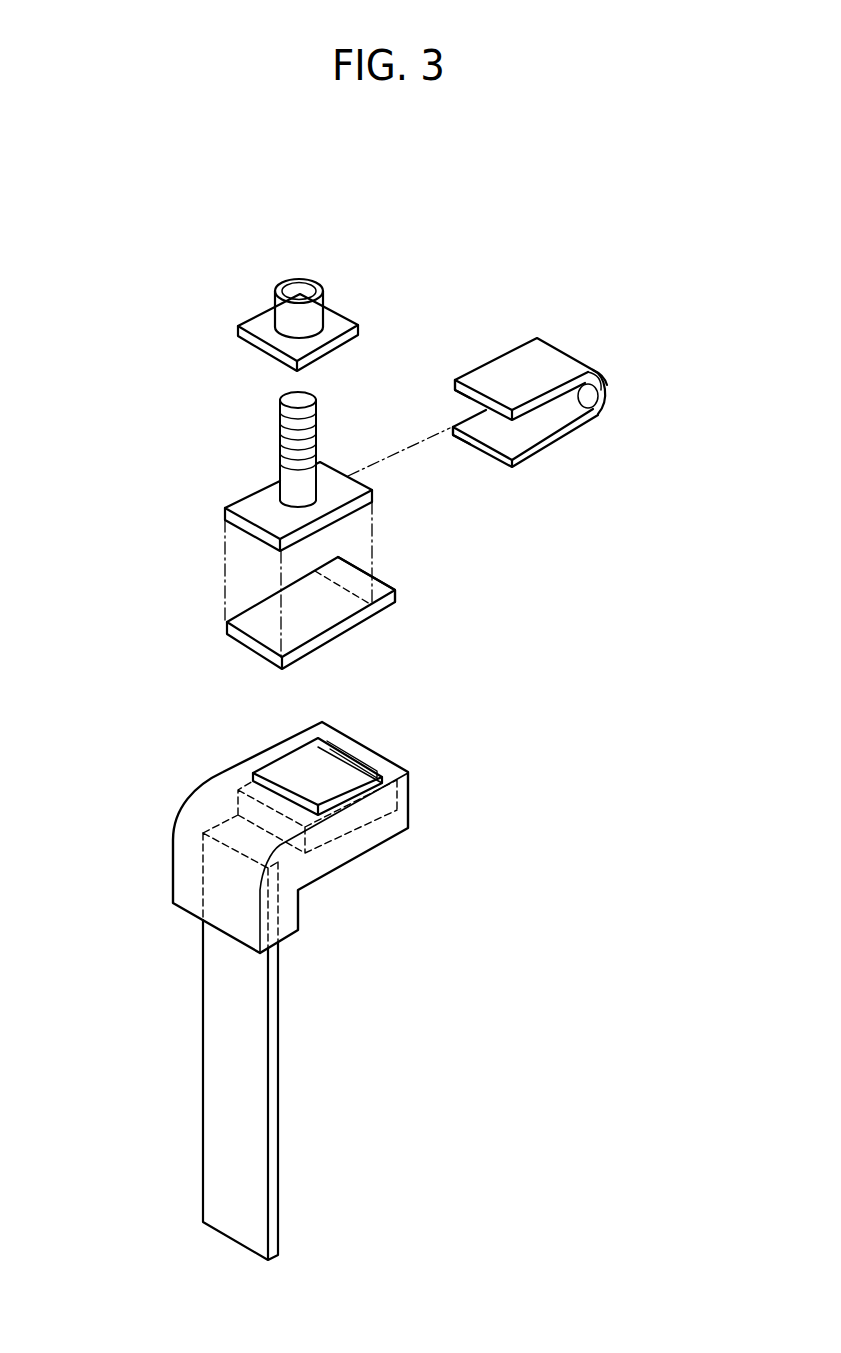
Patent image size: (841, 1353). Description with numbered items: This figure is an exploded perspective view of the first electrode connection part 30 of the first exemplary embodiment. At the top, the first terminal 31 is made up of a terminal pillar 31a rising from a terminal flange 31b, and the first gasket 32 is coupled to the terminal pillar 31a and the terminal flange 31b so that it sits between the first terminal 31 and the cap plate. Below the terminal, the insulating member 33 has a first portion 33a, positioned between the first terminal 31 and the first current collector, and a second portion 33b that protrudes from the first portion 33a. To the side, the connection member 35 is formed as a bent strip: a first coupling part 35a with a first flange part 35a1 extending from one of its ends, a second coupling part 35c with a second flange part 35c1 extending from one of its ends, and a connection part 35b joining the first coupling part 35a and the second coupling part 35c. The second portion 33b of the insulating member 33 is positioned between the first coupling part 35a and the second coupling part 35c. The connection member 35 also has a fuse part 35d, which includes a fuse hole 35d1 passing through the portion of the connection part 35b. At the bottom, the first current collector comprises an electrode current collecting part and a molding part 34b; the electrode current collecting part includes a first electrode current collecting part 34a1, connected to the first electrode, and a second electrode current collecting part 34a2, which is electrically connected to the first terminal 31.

The first electrode connection part 30 is at (449, 201).
The first terminal 31 is at (238, 471).
The terminal pillar 31a is at (281, 452).
The terminal flange 31b is at (259, 508).
The first gasket 32 is at (258, 328).
The insulating member 33 is at (490, 616).
The first portion 33a is at (322, 610).
The second portion 33b is at (377, 590).
The first electrode current collecting part 34a1 is at (215, 1070).
The second electrode current collecting part 34a2 is at (333, 781).
The molding part 34b is at (173, 884).
The connection member 35 is at (560, 424).
The first coupling part 35a is at (480, 356).
The first flange part 35a1 is at (455, 382).
The connection part 35b is at (597, 374).
The second coupling part 35c is at (525, 470).
The second flange part 35c1 is at (495, 453).
The fuse part 35d is at (634, 419).
The fuse hole 35d1 is at (596, 408).